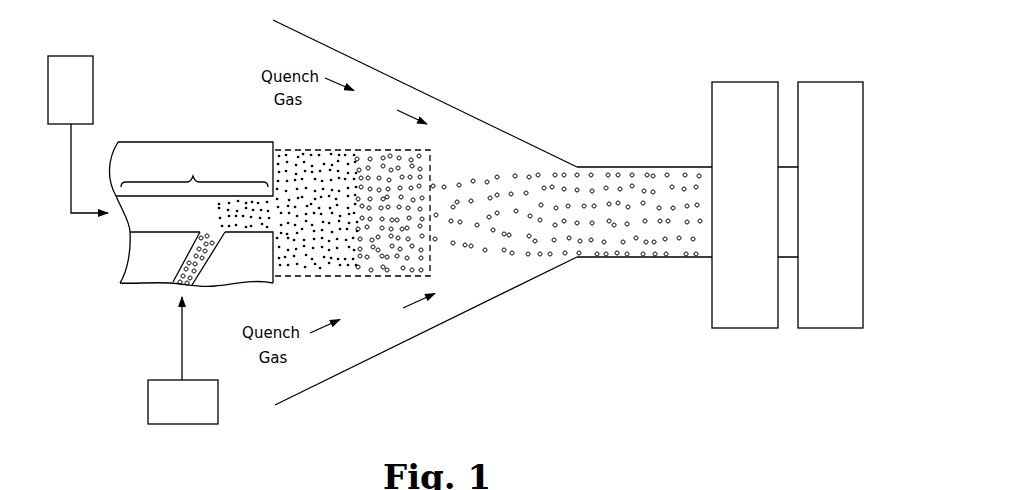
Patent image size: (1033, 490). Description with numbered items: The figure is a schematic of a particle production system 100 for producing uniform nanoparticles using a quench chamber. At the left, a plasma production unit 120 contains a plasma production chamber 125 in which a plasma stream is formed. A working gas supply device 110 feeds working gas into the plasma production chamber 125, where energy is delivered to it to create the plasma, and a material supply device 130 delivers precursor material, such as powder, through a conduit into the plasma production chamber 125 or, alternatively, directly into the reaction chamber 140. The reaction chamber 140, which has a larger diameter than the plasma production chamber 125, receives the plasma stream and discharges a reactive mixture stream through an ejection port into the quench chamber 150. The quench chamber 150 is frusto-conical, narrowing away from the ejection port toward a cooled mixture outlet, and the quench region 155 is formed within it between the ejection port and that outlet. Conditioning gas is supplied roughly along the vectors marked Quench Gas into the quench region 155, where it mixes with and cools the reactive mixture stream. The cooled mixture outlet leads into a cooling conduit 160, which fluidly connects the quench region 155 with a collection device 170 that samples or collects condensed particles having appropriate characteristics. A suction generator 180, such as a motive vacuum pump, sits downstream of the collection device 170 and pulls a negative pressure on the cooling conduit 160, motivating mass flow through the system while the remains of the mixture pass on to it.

The particle production system 100 is at (566, 59).
The working gas supply device 110 is at (72, 61).
The plasma production unit 120 is at (144, 155).
The plasma production chamber 125 is at (194, 169).
The material supply device 130 is at (158, 402).
The reaction chamber 140 is at (374, 278).
The quench chamber 150 is at (404, 82).
The quench region 155 is at (481, 264).
The cooling conduit 160 is at (636, 176).
The collection device 170 is at (745, 205).
The suction generator 180 is at (830, 205).